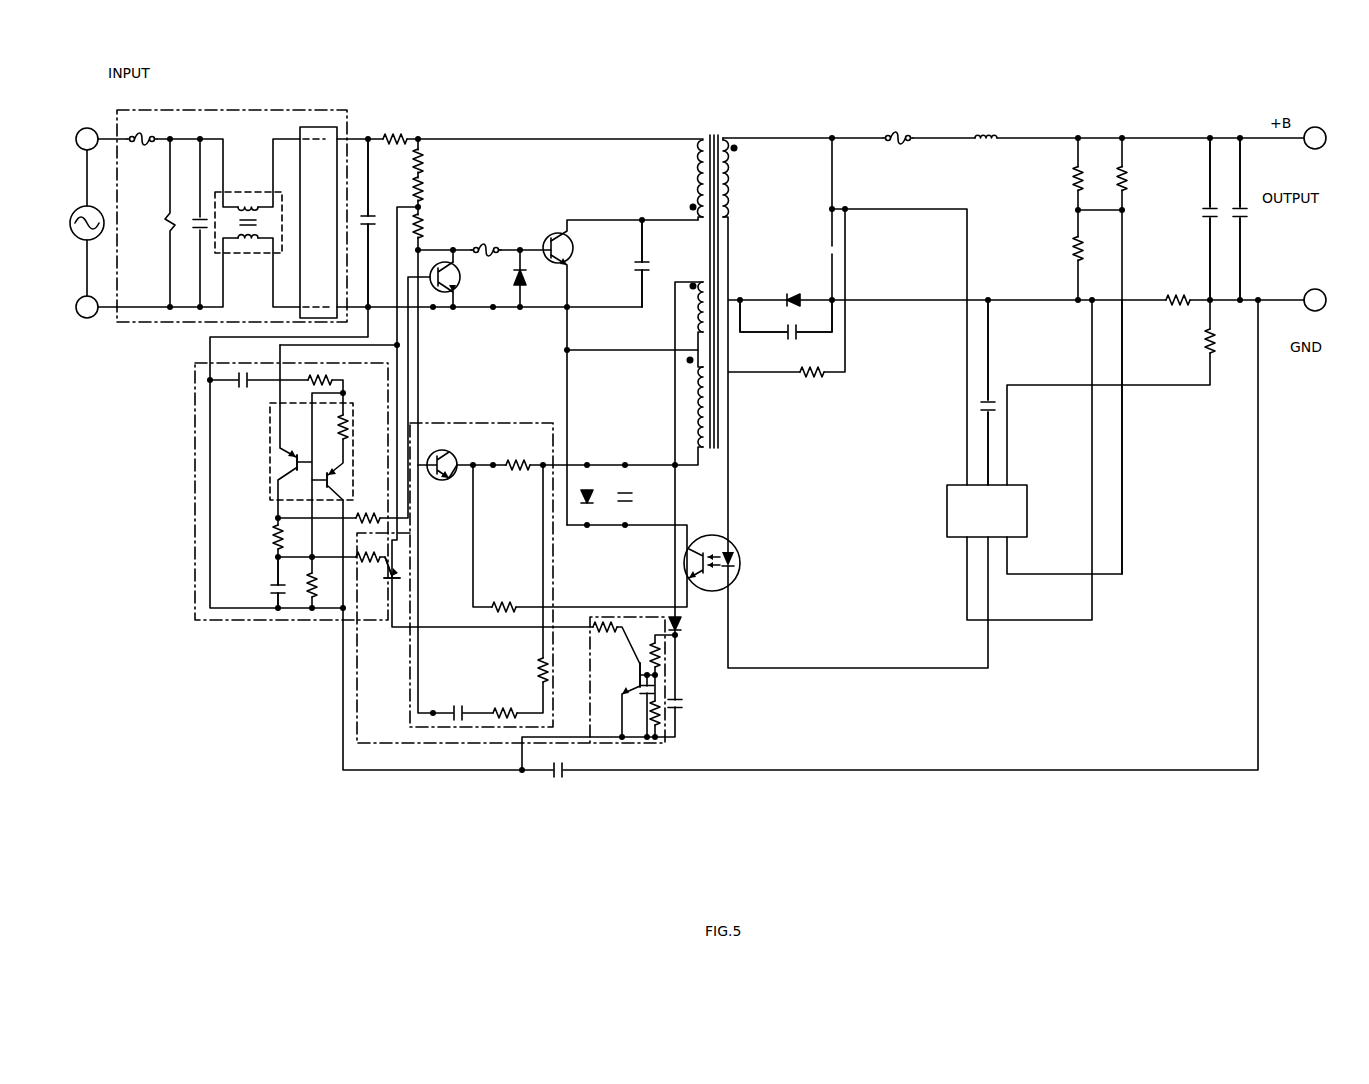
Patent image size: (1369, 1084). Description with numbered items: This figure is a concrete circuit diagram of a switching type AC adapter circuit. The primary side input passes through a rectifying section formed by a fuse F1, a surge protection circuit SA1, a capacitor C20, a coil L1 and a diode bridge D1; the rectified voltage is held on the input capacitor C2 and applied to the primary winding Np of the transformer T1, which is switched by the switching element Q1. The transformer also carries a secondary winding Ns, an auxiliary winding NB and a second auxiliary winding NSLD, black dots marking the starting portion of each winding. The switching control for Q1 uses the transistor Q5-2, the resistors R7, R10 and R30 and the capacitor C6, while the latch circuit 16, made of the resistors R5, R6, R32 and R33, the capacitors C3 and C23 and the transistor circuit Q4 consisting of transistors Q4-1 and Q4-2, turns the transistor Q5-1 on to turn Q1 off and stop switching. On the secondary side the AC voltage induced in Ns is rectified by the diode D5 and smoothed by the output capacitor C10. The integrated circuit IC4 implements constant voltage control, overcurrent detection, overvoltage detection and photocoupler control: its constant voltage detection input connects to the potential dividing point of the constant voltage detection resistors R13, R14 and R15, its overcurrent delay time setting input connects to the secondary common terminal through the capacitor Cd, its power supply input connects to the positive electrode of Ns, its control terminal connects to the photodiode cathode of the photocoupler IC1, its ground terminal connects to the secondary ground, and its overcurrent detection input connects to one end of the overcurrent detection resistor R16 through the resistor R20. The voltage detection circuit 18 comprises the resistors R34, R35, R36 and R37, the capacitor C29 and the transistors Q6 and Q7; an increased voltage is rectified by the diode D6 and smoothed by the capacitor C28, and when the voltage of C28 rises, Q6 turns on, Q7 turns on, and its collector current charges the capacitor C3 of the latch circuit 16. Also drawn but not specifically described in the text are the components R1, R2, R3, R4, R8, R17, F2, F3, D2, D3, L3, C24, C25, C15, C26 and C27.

The latch circuit 16 is at (195, 437).
The voltage detection circuit 18 is at (357, 693).
The fuse F1 is at (142, 131).
The surge protection circuit SA1 is at (160, 223).
The capacitor C20 is at (191, 223).
The coil L1 is at (256, 190).
The diode bridge D1 is at (232, 204).
The input capacitor C2 is at (365, 223).
The resistor R1 is at (395, 129).
The resistor R2 is at (431, 161).
The resistor R3 is at (431, 189).
The resistor R4 is at (431, 226).
The fuse F2 is at (486, 240).
The transistor Q5-1 is at (463, 277).
The diode D2 is at (532, 280).
The switching element Q1 is at (547, 242).
The capacitor C25 is at (629, 263).
The transformer T1 is at (693, 282).
The primary winding Np is at (686, 178).
The secondary winding Ns is at (736, 178).
The second auxiliary winding NSLD is at (670, 307).
The auxiliary winding NB is at (676, 407).
The fuse F3 is at (898, 129).
The inductor L3 is at (986, 126).
The diode D5 is at (794, 290).
The capacitor C24 is at (786, 319).
The resistor R17 is at (813, 363).
The constant voltage detection resistor R13 is at (1066, 180).
The constant voltage detection resistor R14 is at (1066, 250).
The constant voltage detection resistor R15 is at (1111, 180).
The overcurrent detection resistor R16 is at (1178, 291).
The resistor R20 is at (1199, 343).
The output capacitor C10 is at (1201, 219).
The capacitor C15 is at (1231, 219).
The overcurrent delay time setting capacitor Cd is at (996, 392).
The integrated circuit IC4 is at (1029, 511).
The photocoupler IC1 is at (724, 563).
The diode D3 is at (599, 498).
The capacitor C27 is at (641, 498).
The capacitor C23 is at (243, 366).
The resistor R5 is at (320, 366).
The transistor circuit Q4 is at (296, 451).
The transistor Q4-1 is at (299, 474).
The transistor Q4-2 is at (331, 451).
The resistor R32 is at (370, 508).
The resistor R33 is at (259, 533).
The capacitor C3 is at (261, 582).
The resistor R6 is at (304, 585).
The resistor R37 is at (368, 568).
The transistor Q7 is at (389, 559).
The transistor Q5-2 is at (449, 456).
The resistor R7 is at (518, 454).
The resistor R8 is at (504, 597).
The resistor R10 is at (525, 589).
The resistor R30 is at (507, 703).
The capacitor C6 is at (449, 704).
The resistor R36 is at (606, 636).
The transistor Q6 is at (618, 675).
The diode D6 is at (687, 622).
The resistor R34 is at (678, 657).
The capacitor C29 is at (668, 684).
The capacitor C28 is at (676, 706).
The resistor R35 is at (667, 727).
The capacitor C26 is at (558, 763).